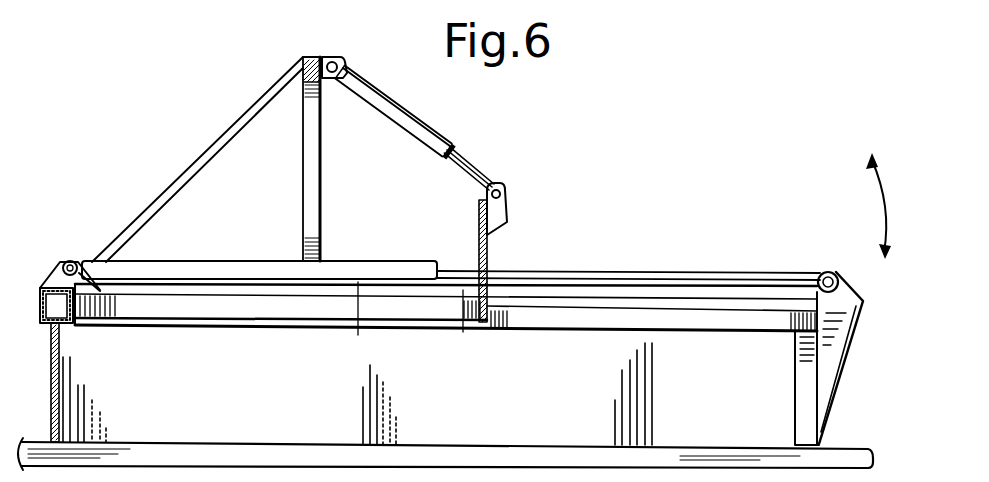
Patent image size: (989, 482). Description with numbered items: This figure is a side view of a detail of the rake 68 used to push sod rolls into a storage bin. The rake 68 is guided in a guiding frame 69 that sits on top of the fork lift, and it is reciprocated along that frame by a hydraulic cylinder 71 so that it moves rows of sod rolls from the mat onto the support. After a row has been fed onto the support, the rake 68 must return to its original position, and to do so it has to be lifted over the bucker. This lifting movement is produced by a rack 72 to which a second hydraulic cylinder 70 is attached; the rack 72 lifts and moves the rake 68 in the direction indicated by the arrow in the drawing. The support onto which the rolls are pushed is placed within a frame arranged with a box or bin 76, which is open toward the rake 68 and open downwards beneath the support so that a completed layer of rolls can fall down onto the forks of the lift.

The rake 68 is at (828, 372).
The guiding frame 69 is at (205, 308).
The hydraulic cylinder 70 is at (380, 98).
The hydraulic cylinder 71 is at (208, 259).
The rack 72 is at (316, 171).
The box or bin 76 is at (52, 352).